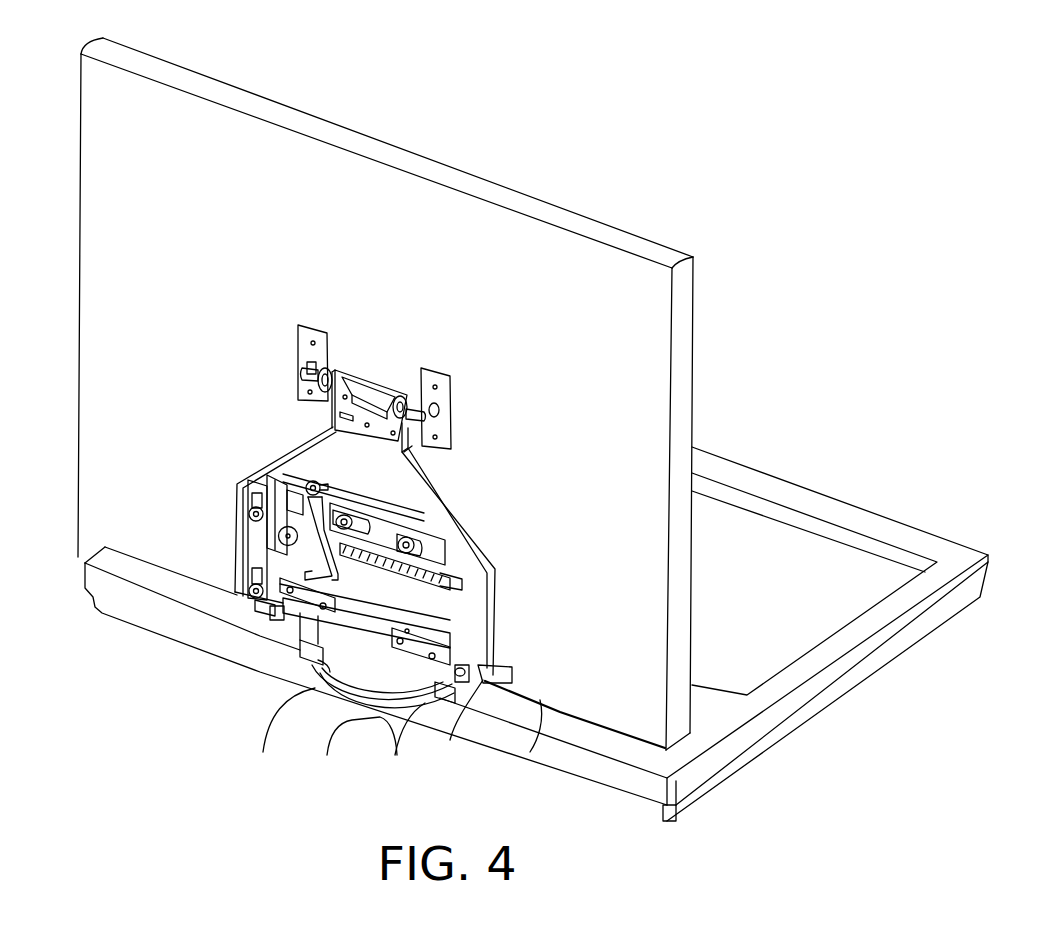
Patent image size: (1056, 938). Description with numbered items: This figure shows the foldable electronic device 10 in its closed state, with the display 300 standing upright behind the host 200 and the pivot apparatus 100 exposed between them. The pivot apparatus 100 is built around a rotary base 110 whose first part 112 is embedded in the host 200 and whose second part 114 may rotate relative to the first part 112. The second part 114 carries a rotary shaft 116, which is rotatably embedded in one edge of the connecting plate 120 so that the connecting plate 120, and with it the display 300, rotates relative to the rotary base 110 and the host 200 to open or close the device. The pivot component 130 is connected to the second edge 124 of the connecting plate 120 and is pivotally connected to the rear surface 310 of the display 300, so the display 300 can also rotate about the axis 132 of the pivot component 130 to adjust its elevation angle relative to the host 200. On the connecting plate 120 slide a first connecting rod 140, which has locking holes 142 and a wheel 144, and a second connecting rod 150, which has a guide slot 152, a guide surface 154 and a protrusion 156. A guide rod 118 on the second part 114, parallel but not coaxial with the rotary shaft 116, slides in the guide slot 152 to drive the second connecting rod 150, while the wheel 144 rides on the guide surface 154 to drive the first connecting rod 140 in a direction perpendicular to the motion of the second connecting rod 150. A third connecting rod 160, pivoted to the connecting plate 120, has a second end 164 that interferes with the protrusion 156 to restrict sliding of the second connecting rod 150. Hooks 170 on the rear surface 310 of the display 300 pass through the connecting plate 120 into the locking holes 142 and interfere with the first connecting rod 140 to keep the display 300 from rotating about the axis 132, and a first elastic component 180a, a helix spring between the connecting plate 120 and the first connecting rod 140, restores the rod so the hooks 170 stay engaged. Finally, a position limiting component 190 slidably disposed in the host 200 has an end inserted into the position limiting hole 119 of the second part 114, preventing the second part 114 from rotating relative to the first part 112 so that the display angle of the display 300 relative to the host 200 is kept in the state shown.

The foldable electronic device 10 is at (885, 792).
The pivot apparatus 100 is at (478, 482).
The rotary base 110 is at (389, 743).
The first part 112 is at (377, 711).
The second part 114 is at (305, 690).
The rotary shaft 116 is at (418, 700).
The guide rod 118 is at (262, 605).
The position limiting hole 119 is at (443, 697).
The connecting plate 120 is at (498, 636).
The second edge 124 is at (368, 392).
The pivot component 130 is at (320, 323).
The axis 132 is at (420, 400).
The first connecting rod 140 is at (495, 590).
The locking hole 142 is at (347, 487).
The wheel 144 is at (288, 505).
The second connecting rod 150 is at (253, 538).
The guide slot 152 is at (277, 612).
The guide surface 154 is at (278, 505).
The protrusion 156 is at (280, 543).
The third connecting rod 160 is at (357, 575).
The second end 164 is at (423, 473).
The hook 170 is at (307, 515).
The first elastic component 180a is at (440, 602).
The position limiting component 190 is at (490, 702).
The host 200 is at (922, 640).
The display 300 is at (688, 320).
The rear surface 310 is at (621, 314).